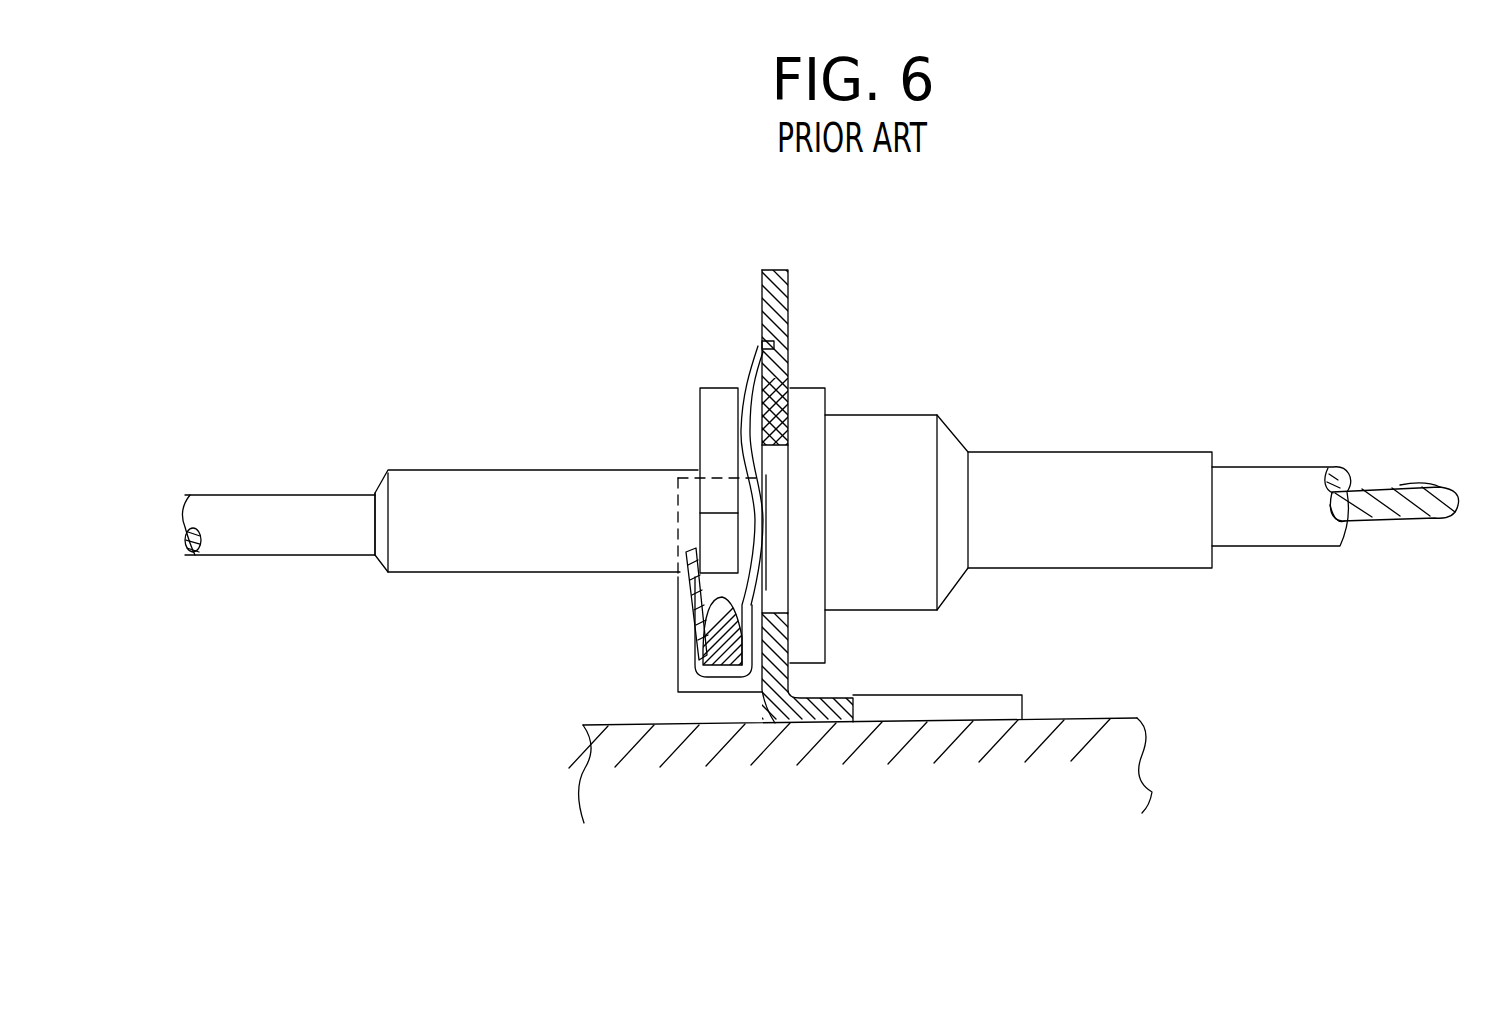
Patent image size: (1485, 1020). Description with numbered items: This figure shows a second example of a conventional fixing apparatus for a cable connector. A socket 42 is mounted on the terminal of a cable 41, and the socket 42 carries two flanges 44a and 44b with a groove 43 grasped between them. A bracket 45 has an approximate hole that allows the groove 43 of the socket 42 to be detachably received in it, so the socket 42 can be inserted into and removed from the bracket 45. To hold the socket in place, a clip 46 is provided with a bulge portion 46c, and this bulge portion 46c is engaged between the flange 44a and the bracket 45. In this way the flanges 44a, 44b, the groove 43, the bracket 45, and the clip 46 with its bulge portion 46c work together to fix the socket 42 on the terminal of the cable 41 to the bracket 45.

The cable 41 is at (1267, 483).
The socket 42 is at (893, 405).
The groove 43 is at (783, 380).
The flange 44a is at (718, 395).
The flange 44b is at (808, 398).
The bracket 45 is at (957, 710).
The clip 46 is at (755, 657).
The bulge portion 46c is at (746, 396).